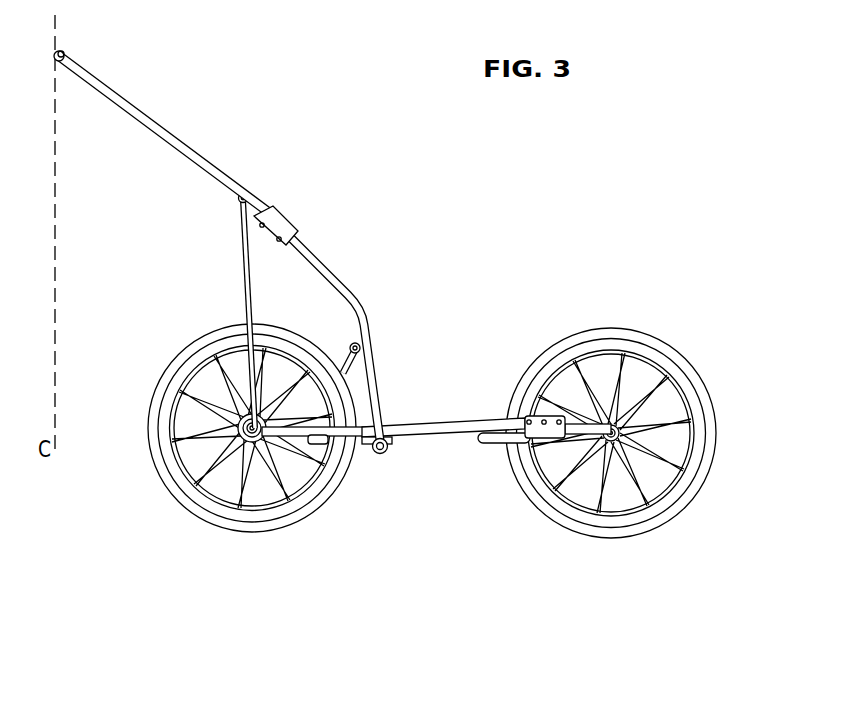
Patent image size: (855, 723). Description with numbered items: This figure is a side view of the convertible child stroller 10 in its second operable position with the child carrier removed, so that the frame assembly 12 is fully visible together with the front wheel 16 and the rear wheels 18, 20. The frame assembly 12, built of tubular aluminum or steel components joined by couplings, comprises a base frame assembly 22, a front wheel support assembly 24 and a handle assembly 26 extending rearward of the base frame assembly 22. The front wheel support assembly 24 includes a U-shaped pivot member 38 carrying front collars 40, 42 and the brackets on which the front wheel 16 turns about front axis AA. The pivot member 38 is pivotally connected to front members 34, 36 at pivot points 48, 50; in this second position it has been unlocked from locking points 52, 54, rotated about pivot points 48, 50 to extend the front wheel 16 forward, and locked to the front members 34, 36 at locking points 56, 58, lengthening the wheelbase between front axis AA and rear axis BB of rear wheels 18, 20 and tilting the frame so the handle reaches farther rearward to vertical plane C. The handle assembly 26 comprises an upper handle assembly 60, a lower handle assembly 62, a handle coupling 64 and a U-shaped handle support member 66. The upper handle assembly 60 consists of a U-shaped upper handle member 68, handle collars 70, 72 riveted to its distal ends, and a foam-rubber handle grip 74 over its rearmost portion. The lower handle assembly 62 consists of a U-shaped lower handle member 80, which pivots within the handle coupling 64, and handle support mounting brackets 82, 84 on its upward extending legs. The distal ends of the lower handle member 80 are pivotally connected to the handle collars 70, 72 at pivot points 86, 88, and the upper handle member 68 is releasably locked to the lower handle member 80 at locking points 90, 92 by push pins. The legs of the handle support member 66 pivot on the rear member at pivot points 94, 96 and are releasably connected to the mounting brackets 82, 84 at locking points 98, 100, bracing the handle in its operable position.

The convertible child stroller 10 is at (507, 203).
The frame assembly 12 is at (353, 288).
The front wheel 16 is at (698, 401).
The rear wheel 18 is at (207, 428).
The rear wheel 20 is at (251, 434).
The base frame assembly 22 is at (438, 441).
The front wheel support assembly 24 is at (492, 511).
The handle assembly 26 is at (274, 204).
The front member 34 is at (333, 494).
The front member 36 is at (405, 438).
The U-shaped pivot member 38 is at (477, 442).
The front collar 40 is at (544, 430).
The front collar 42 is at (546, 432).
The pivot point 48 is at (537, 359).
The pivot point 50 is at (544, 419).
The locking point 52 is at (595, 358).
The locking point 54 is at (559, 419).
The locking point 56 is at (493, 384).
The locking point 58 is at (528, 418).
The upper handle assembly 60 is at (168, 124).
The lower handle assembly 62 is at (314, 251).
The handle coupling 64 is at (380, 455).
The U-shaped handle support member 66 is at (362, 368).
The U-shaped upper handle member 68 is at (120, 98).
The handle collar 70 is at (263, 228).
The handle collar 72 is at (284, 214).
The handle grip 74 is at (60, 48).
The U-shaped lower handle member 80 is at (326, 274).
The handle support mounting bracket 82 is at (405, 354).
The handle support mounting bracket 84 is at (367, 320).
The pivot point 86 is at (201, 229).
The pivot point 88 is at (260, 225).
The locking point 90 is at (213, 258).
The locking point 92 is at (277, 241).
The pivot point 94 is at (345, 482).
The pivot point 96 is at (317, 437).
The locking point 98 is at (415, 327).
The locking point 100 is at (360, 346).